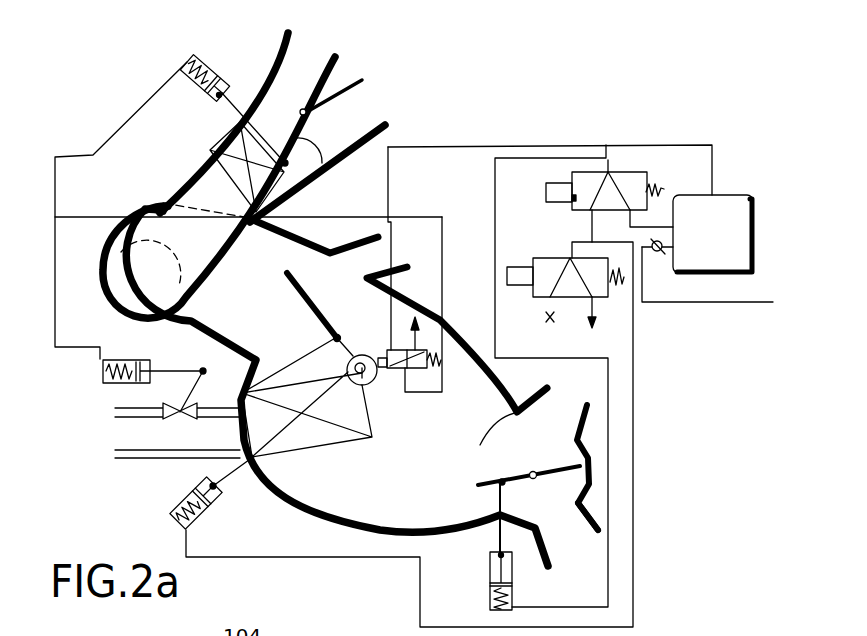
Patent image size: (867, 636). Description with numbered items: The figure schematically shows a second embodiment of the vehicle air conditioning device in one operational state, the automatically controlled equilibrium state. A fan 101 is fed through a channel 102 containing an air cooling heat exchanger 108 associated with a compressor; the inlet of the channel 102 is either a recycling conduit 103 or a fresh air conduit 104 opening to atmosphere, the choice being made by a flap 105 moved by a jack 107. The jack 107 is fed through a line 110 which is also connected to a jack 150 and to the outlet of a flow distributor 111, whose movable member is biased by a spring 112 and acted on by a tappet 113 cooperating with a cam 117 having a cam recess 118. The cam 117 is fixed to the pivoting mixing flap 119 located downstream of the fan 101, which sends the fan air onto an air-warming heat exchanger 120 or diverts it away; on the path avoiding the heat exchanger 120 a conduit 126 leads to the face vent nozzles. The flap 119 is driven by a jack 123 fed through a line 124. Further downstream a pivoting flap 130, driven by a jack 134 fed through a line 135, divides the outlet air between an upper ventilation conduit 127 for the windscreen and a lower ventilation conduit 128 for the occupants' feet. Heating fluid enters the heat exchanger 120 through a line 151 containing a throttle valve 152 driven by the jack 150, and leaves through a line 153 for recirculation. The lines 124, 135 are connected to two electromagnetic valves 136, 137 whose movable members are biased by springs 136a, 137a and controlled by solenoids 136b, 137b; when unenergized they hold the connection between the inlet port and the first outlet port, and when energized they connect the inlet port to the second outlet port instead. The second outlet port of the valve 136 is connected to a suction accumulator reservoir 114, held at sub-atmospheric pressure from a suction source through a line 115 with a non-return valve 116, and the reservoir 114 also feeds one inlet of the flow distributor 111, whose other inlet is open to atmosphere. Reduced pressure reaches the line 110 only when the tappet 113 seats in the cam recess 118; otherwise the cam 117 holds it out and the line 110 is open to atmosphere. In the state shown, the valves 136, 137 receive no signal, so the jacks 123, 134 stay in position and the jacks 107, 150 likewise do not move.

The fan 101 is at (87, 312).
The channel 102 is at (173, 187).
The recycling conduit 103 is at (353, 112).
The fresh air conduit 104 is at (277, 55).
The flap 105 is at (317, 173).
The jack 107 is at (187, 55).
The air cooling heat exchanger 108 is at (213, 150).
The line 110 is at (62, 208).
The flow distributor 111 is at (425, 347).
The spring 112 is at (440, 360).
The tappet 113 is at (387, 367).
The suction accumulator reservoir 114 is at (717, 212).
The line 115 is at (737, 305).
The non-return valve 116 is at (662, 253).
The cam 117 is at (358, 355).
The cam recess 118 is at (370, 383).
The pivoting flap 119 is at (313, 305).
The air-warming heat exchanger 120 is at (313, 433).
The jack 123 is at (213, 497).
The line 124 is at (257, 553).
The conduit 126 is at (362, 254).
The upper ventilation conduit 127 is at (587, 418).
The lower ventilation conduit 128 is at (588, 518).
The pivoting flap 130 is at (577, 463).
The jack 134 is at (490, 600).
The line 135 is at (608, 483).
The electromagnetic valve 136 is at (628, 184).
The spring 136a is at (664, 189).
The solenoid 136b is at (546, 194).
The electromagnetic valve 137 is at (548, 265).
The spring 137a is at (617, 288).
The solenoid 137b is at (527, 270).
The jack 150 is at (110, 385).
The line 151 is at (115, 415).
The throttle valve 152 is at (172, 420).
The line 153 is at (165, 455).